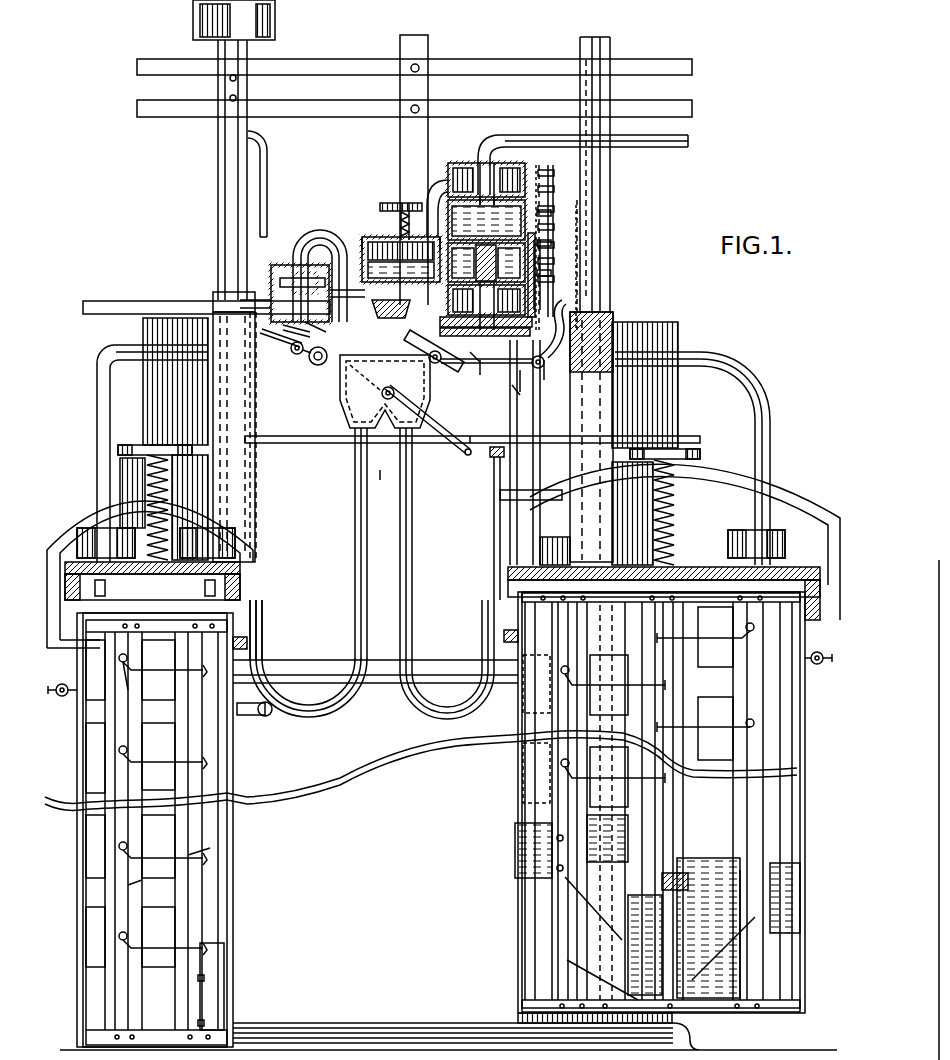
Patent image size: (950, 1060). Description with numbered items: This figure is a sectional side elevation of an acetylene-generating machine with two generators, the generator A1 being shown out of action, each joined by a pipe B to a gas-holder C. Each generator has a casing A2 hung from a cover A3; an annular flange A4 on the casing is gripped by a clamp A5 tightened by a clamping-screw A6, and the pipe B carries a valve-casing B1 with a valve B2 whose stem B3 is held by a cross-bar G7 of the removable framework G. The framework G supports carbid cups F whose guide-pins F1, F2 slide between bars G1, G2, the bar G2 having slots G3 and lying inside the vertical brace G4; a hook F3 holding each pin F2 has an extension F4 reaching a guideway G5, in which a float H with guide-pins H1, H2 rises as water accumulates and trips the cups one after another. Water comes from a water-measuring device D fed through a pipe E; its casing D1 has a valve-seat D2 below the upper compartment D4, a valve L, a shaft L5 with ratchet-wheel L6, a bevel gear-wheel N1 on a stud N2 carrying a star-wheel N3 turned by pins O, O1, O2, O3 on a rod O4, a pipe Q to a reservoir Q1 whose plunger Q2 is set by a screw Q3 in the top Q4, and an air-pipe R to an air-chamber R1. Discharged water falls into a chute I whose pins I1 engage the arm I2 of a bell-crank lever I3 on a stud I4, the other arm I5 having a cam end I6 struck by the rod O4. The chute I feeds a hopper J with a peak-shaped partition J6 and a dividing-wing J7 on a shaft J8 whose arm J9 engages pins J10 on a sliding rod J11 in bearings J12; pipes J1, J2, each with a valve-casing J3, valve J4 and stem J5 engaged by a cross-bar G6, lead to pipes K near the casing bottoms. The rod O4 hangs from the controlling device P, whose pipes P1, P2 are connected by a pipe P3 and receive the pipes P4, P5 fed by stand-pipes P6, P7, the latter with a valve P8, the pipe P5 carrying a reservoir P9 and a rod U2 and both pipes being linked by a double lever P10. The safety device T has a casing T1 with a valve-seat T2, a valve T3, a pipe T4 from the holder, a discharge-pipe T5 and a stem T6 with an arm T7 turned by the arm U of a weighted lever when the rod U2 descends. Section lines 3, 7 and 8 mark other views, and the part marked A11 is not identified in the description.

The reservoir P9 is at (280, 32).
The pipe P5 is at (216, 220).
The double lever P10 is at (414, 88).
The rod U2 is at (268, 216).
The controlling device P is at (602, 174).
The pipe P4 is at (612, 196).
The vertically-disposed pipe P1 is at (616, 312).
The stand-pipe P6 is at (600, 288).
The supply-pipe E is at (684, 150).
The water-measuring device D is at (486, 192).
The air-chamber R1 is at (480, 163).
The valve-seat D2 is at (486, 262).
The casing D1 is at (486, 306).
The upper compartment D4 is at (384, 318).
The pin O is at (554, 300).
The pin O1 is at (554, 262).
The pin O2 is at (554, 210).
The pin O3 is at (554, 174).
The rod O4 is at (554, 190).
The bevel gear-wheel N1 is at (554, 228).
The stud N2 is at (554, 280).
The star-wheel N3 is at (554, 246).
The section line 7 7 is at (540, 241).
The section line 8 8 is at (578, 262).
The air-pipe R is at (430, 186).
The pipe Q is at (402, 269).
The reservoir Q1 is at (368, 286).
The movable plunger Q2 is at (366, 238).
The screw Q3 is at (401, 228).
The top Q4 is at (436, 238).
The pipe T4 is at (320, 266).
The casing T1 is at (272, 278).
The valve T3 is at (302, 283).
The safety device T is at (265, 271).
The discharge-pipe T5 is at (206, 290).
The stand-pipe P7 is at (224, 290).
The valve-seat T2 is at (322, 329).
The stem T6 is at (321, 332).
The arm T7 is at (300, 355).
The arm U is at (303, 355).
The gas-holder C is at (648, 322).
The vertically-disposed pipe P2 is at (256, 372).
The pipe B is at (97, 428).
The clamping-screw A6 is at (120, 452).
The clamp A5 is at (88, 512).
The valve-casing B1 is at (122, 528).
The valve B2 is at (77, 535).
The cover A3 is at (722, 567).
The stem B3 is at (107, 588).
The generator A1 is at (234, 920).
The casing A2 is at (228, 885).
The annular flange A4 is at (247, 642).
The cross-bar G6 is at (207, 620).
The vertical brace G4 is at (105, 710).
The cups or boxes F is at (86, 830).
The slots G3 is at (118, 664).
The float H is at (224, 980).
The guide-pin H1 is at (198, 980).
The guide-pin H2 is at (204, 1023).
The valve A11 is at (438, 674).
The valve P8 is at (264, 716).
The cross-bar G7 is at (740, 612).
The guide-pin F2 is at (142, 840).
The guide-pin F1 is at (142, 866).
The hook F3 is at (118, 850).
The extension F4 is at (684, 815).
The bar G1 is at (175, 882).
The bar G2 is at (815, 838).
The guideway G5 is at (501, 822).
The framework G is at (518, 800).
The hopper J is at (430, 385).
The stem J5 is at (382, 396).
The dividing-wing J7 is at (340, 372).
The pins J10 is at (462, 455).
The arm J9 is at (465, 436).
The rod J11 is at (490, 436).
The partition J6 is at (368, 455).
The shaft J8 is at (372, 475).
The pipe P3 is at (380, 695).
The bearings J12 is at (494, 498).
The pipe J1 is at (510, 540).
The pipe J2 is at (355, 540).
The valve-casing J3 is at (262, 528).
The valve J4 is at (262, 552).
The pipes K is at (495, 656).
The shaft L5 is at (485, 340).
The valve L is at (412, 340).
The ratchet-wheel L6 is at (489, 372).
The pins I1 is at (438, 364).
The arm I2 is at (510, 366).
The chute I is at (475, 353).
The bell-crank lever I3 is at (554, 370).
The stud I4 is at (528, 382).
The arm I5 is at (515, 394).
The cam end I6 is at (555, 329).
The section line 3 3 is at (830, 720).